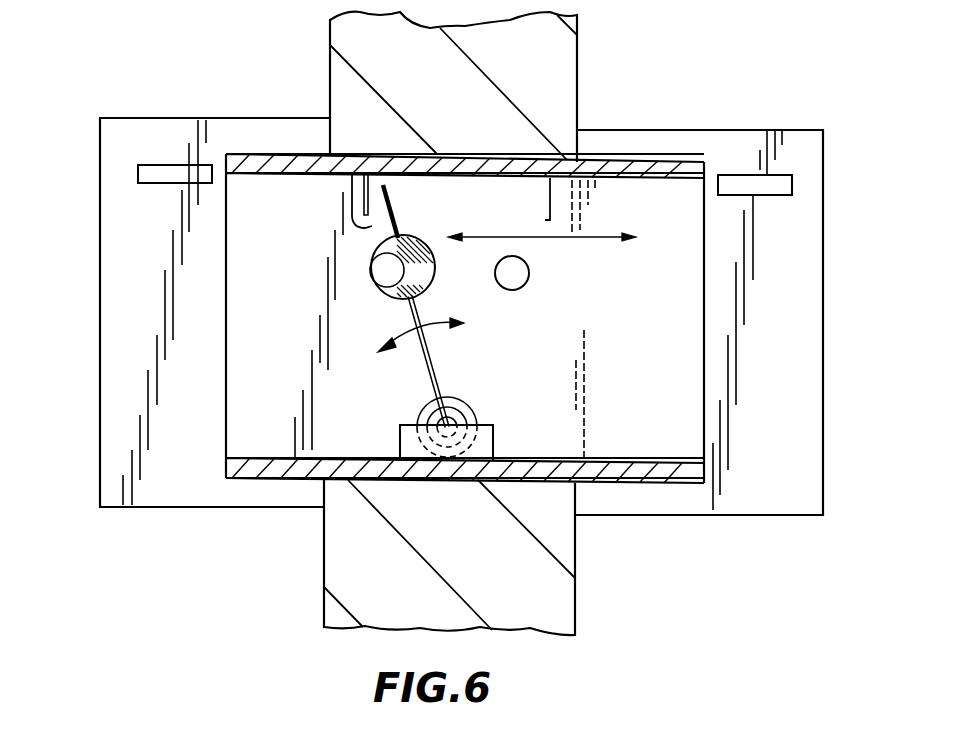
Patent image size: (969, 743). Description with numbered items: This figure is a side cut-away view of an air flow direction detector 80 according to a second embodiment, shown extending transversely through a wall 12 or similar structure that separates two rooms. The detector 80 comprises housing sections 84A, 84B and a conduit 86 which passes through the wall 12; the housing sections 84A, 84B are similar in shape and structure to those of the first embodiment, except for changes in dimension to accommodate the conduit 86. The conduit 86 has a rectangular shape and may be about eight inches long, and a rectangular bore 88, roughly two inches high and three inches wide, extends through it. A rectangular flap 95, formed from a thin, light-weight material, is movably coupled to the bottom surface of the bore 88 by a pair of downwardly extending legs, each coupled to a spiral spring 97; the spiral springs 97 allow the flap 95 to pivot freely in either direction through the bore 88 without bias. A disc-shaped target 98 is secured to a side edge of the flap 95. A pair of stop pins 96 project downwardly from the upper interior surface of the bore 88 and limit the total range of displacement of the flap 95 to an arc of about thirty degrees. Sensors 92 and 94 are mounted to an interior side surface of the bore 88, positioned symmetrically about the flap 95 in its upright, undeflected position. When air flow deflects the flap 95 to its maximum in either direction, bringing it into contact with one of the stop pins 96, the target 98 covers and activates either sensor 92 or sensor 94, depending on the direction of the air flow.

The wall 12 is at (575, 597).
The air flow direction detector 80 is at (84, 320).
The housing section 84A is at (825, 436).
The housing section 84B is at (98, 465).
The conduit 86 is at (590, 160).
The rectangular bore 88 is at (333, 458).
The sensor 92 is at (373, 280).
The sensor 94 is at (528, 284).
The rectangular flap 95 is at (402, 234).
The stop pins 96 is at (352, 225).
The spiral spring 97 is at (466, 400).
The disc-shaped target 98 is at (437, 276).